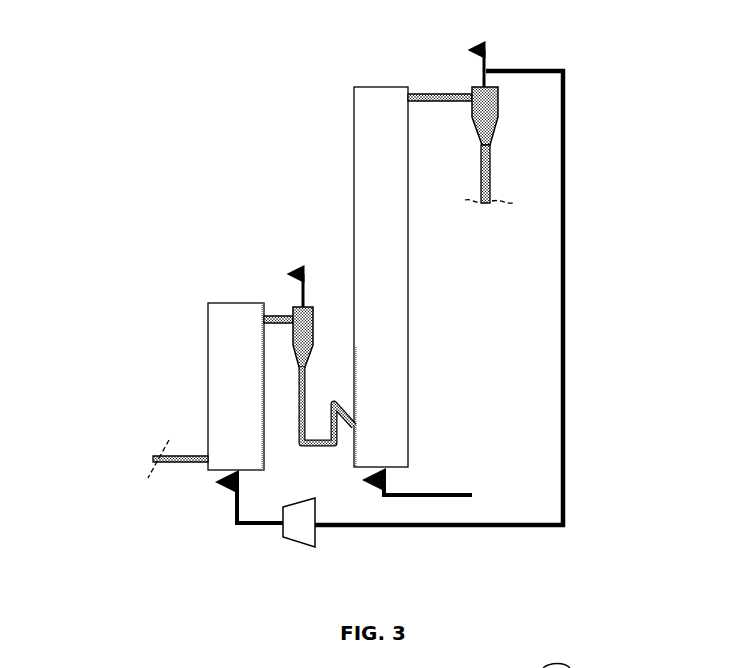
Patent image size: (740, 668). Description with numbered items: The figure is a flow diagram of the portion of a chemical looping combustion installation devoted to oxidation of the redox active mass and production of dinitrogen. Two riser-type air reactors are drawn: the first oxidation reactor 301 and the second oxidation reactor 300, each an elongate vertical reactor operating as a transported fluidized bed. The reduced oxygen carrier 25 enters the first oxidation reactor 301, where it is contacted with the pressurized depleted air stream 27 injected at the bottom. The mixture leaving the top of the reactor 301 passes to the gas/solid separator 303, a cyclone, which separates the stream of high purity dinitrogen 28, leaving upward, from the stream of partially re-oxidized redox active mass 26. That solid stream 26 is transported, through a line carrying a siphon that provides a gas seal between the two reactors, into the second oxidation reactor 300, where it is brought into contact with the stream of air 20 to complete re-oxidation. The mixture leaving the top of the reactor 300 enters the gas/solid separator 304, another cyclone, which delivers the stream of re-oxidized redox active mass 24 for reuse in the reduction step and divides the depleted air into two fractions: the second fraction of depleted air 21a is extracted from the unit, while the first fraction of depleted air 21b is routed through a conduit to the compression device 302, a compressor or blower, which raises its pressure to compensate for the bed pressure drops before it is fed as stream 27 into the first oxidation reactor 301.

The second oxidation reactor 300 is at (375, 170).
The first oxidation reactor 301 is at (228, 378).
The compression device 302 is at (313, 532).
The gas/solid separator 303 is at (297, 304).
The gas/solid separator 304 is at (478, 88).
The stream of air 20 is at (432, 492).
The second fraction of depleted air 21a is at (492, 42).
The first fraction of depleted air 21b is at (563, 305).
The stream of re-oxidized redox active mass 24 is at (488, 170).
The reduced oxygen carrier 25 is at (172, 462).
The stream of partially re-oxidized redox active mass 26 is at (305, 387).
The stream of pressurized depleted air 27 is at (235, 510).
The stream of high purity dinitrogen 28 is at (298, 265).